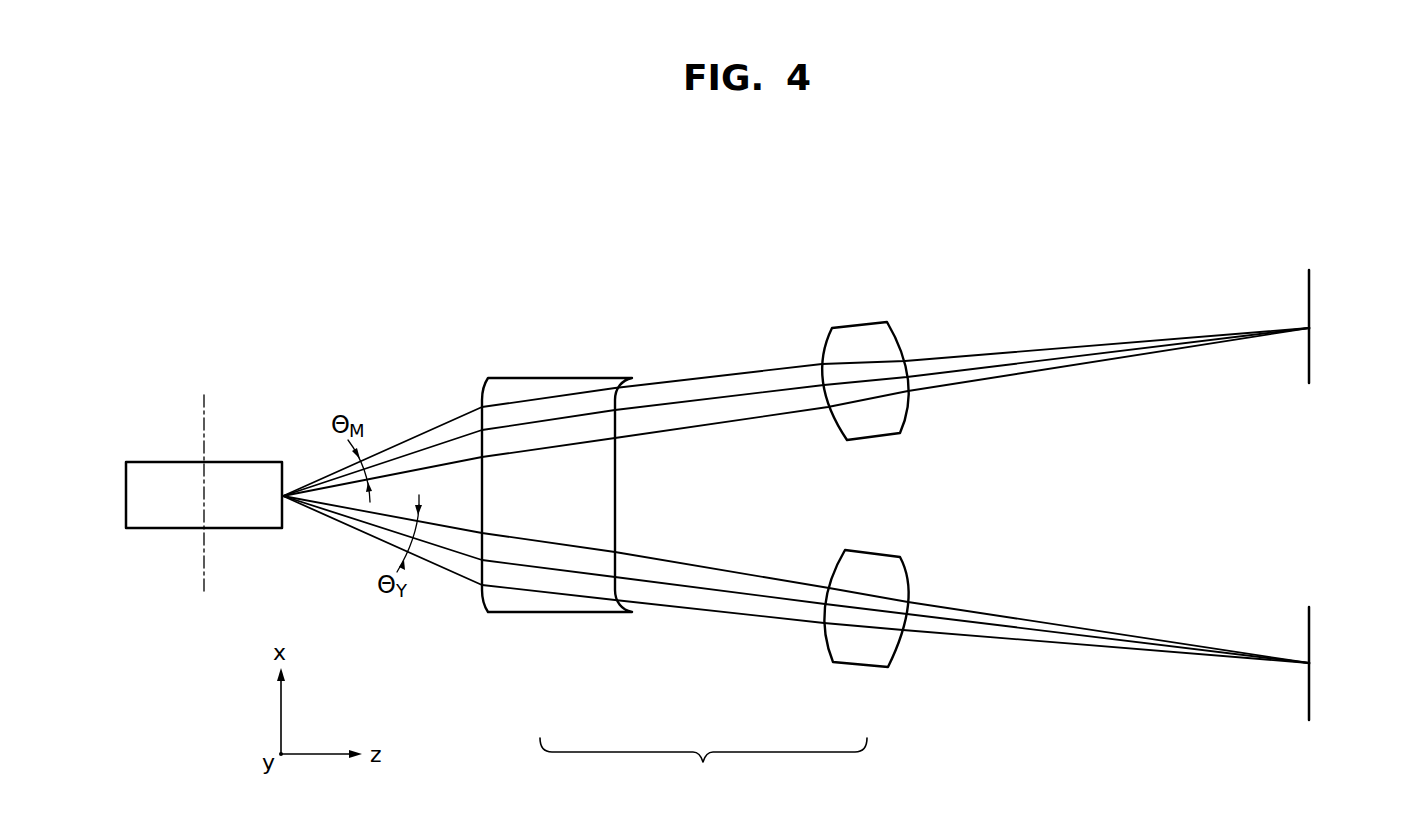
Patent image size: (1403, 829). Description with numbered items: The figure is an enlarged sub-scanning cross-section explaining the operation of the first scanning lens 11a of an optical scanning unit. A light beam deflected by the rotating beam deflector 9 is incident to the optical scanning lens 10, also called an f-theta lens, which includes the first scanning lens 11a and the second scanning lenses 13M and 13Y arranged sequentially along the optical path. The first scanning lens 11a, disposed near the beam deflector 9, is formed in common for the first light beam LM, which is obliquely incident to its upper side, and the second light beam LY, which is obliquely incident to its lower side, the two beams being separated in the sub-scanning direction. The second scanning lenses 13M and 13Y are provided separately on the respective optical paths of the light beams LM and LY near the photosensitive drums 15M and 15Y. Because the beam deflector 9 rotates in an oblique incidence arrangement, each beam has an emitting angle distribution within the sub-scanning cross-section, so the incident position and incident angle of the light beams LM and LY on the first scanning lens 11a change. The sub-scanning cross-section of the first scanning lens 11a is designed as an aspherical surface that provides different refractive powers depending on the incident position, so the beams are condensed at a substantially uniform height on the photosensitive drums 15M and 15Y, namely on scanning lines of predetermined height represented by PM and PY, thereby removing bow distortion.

The beam deflector 9 is at (153, 461).
The optical scanning lens 10 is at (703, 764).
The first scanning lens 11a is at (573, 375).
The second scanning lens 13M is at (847, 323).
The second scanning lens 13Y is at (850, 665).
The photosensitive drum 15M is at (1309, 360).
The photosensitive drum 15Y is at (1309, 632).
The scanning line of predetermined height PM is at (1309, 328).
The scanning line of predetermined height PY is at (1309, 663).
The first light beam LM is at (445, 423).
The second light beam LY is at (470, 579).